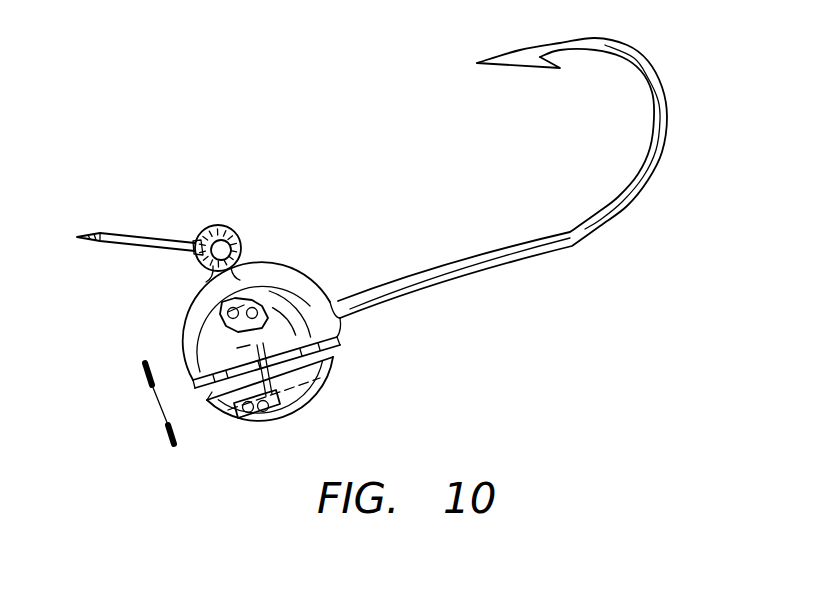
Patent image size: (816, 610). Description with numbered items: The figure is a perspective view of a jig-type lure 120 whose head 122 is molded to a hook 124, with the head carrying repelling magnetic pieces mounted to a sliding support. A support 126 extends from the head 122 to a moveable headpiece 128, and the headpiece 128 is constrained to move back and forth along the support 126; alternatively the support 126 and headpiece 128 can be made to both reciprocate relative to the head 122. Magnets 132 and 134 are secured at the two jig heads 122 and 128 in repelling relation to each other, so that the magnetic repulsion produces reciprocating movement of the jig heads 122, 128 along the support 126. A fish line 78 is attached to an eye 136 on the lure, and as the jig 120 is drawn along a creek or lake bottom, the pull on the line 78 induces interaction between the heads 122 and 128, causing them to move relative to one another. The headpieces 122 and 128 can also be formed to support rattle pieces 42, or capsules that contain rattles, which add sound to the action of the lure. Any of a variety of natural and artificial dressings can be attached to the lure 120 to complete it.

The jig-type lure 120 is at (198, 172).
The fish line 78 is at (140, 237).
The eye 136 is at (221, 229).
The head 122 is at (192, 304).
The rattle pieces 42 is at (246, 297).
The hook 124 is at (575, 240).
The magnet 132 is at (340, 340).
The support 126 is at (333, 357).
The moveable headpiece 128 is at (325, 393).
The magnet 134 is at (208, 400).